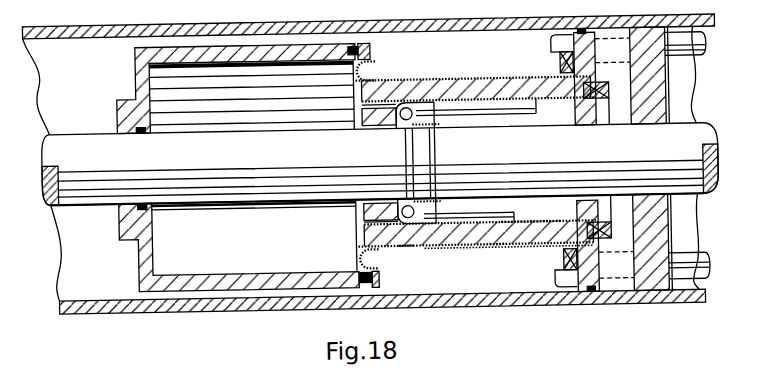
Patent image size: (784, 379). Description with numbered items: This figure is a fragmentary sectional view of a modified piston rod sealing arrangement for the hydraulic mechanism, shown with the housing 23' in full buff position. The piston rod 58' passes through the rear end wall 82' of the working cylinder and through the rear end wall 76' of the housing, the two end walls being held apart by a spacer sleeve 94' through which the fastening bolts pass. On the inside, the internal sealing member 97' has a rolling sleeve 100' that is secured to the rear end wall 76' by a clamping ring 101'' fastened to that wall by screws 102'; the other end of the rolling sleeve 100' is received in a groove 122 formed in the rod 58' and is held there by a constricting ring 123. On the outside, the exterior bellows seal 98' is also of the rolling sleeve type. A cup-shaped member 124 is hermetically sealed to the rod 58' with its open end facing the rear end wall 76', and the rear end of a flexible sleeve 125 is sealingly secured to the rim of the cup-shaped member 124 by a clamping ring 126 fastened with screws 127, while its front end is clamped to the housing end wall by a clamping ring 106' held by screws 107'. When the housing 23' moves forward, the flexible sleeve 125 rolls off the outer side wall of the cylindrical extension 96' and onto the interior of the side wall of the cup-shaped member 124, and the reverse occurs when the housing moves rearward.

The piston rod 58' is at (364, 164).
The housing 23' is at (382, 312).
The cup-shaped member 124 is at (272, 256).
The screws 127 is at (357, 47).
The clamping ring 126 is at (380, 53).
The groove 122 is at (422, 145).
The rolling sleeve 100' is at (475, 162).
The rear end wall 76' is at (606, 62).
The spacer sleeve 94' is at (597, 36).
The rear end wall of the cylinder 82' is at (649, 159).
The internal sealing member 97' is at (531, 211).
The screws 102' is at (590, 219).
The clamping ring 101'' is at (622, 236).
The constricting ring 123 is at (401, 247).
The cylindrical extension 96' is at (408, 236).
The exterior bellows seal 98' is at (469, 246).
The flexible sleeve 125 is at (495, 248).
The clamping ring 106' is at (552, 260).
The screws 107' is at (552, 277).